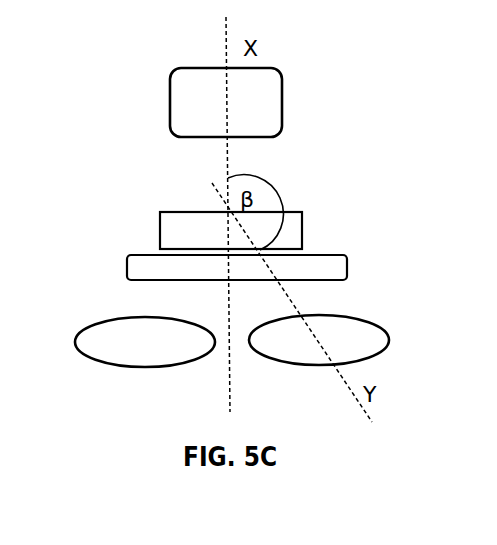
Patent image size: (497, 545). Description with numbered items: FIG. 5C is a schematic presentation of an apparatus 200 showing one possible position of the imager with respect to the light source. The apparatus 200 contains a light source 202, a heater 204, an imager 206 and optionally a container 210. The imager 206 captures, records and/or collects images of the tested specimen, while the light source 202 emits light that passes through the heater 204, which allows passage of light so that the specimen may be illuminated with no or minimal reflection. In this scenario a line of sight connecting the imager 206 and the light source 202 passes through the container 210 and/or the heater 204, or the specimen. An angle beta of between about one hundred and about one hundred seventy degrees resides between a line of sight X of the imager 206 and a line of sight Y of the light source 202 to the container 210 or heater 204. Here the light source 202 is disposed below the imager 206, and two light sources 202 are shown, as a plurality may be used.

The apparatus 200 is at (342, 34).
The light source 202 is at (100, 300).
The heater 204 is at (362, 262).
The imager 206 is at (297, 120).
The container 210 is at (323, 226).